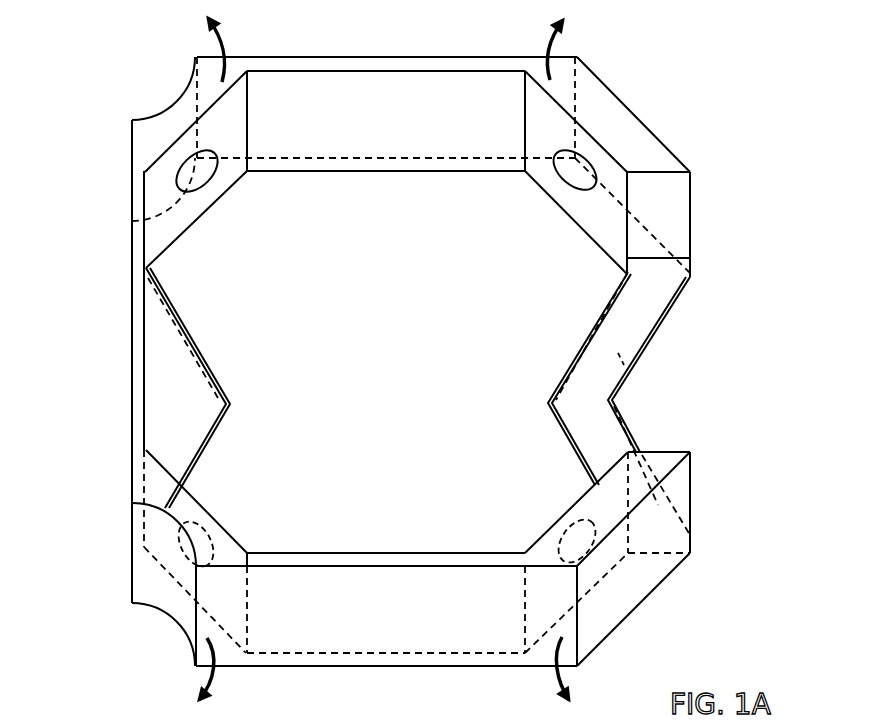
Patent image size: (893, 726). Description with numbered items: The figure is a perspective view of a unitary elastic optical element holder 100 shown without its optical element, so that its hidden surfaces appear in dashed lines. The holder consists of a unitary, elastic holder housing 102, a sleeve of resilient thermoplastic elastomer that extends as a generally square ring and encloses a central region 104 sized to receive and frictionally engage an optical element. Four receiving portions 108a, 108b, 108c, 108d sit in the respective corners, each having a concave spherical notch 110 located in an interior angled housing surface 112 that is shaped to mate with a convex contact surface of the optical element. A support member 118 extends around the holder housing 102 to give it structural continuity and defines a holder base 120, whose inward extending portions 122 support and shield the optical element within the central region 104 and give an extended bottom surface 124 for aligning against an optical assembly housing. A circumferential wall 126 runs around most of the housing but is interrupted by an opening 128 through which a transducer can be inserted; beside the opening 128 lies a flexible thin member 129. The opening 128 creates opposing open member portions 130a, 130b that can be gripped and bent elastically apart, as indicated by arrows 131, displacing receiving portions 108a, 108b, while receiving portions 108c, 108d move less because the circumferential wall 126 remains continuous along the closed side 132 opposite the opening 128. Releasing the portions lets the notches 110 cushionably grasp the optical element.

The optical element holder 100 is at (98, 652).
The holder housing 102 is at (132, 232).
The central region 104 is at (258, 338).
The receiving portion 108a is at (577, 196).
The receiving portion 108b is at (545, 517).
The receiving portion 108c is at (227, 217).
The receiving portion 108d is at (227, 513).
The concave spherical notch 110 is at (190, 195).
The interior angled housing surface 112 is at (222, 119).
The support member 118 is at (657, 283).
The holder base 120 is at (670, 318).
The inward extending portions 122 is at (217, 382).
The bottom surface 124 is at (610, 218).
The circumferential wall 126 is at (663, 187).
The opening 128 is at (717, 409).
The thin member 129 is at (620, 322).
The open member portion 130a is at (617, 125).
The open member portion 130b is at (617, 497).
The arrows 131 is at (215, 44).
The closed side 132 is at (132, 281).